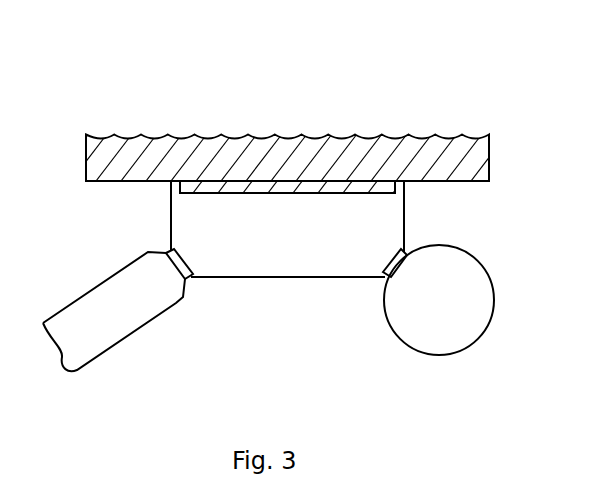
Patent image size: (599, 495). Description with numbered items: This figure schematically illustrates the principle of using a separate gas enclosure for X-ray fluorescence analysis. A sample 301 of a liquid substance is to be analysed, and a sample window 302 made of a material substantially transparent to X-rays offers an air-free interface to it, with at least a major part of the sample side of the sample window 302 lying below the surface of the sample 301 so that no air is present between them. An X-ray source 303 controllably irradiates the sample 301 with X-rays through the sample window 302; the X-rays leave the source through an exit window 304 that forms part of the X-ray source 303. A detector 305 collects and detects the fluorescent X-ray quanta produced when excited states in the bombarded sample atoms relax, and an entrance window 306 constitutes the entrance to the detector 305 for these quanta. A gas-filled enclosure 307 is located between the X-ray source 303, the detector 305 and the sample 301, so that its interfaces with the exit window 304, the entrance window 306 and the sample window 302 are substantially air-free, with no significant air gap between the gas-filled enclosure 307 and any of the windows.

The sample 301 is at (407, 150).
The sample window 302 is at (268, 188).
The X-ray source 303 is at (135, 330).
The exit window 304 is at (192, 271).
The detector 305 is at (385, 322).
The entrance window 306 is at (385, 268).
The gas-filled enclosure 307 is at (404, 216).